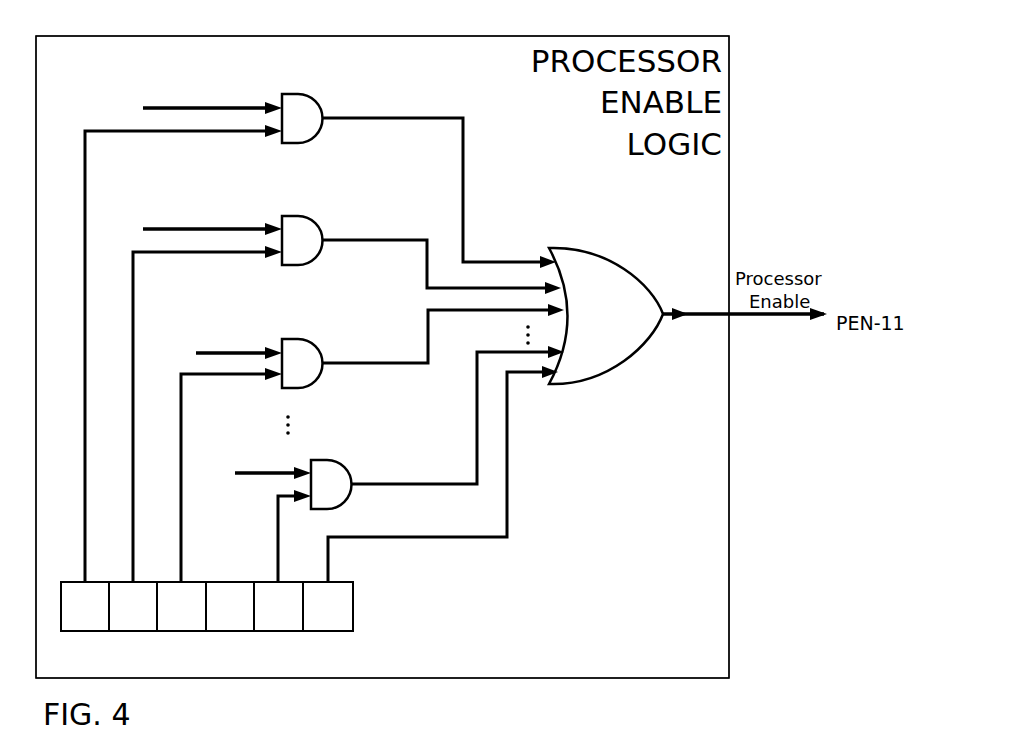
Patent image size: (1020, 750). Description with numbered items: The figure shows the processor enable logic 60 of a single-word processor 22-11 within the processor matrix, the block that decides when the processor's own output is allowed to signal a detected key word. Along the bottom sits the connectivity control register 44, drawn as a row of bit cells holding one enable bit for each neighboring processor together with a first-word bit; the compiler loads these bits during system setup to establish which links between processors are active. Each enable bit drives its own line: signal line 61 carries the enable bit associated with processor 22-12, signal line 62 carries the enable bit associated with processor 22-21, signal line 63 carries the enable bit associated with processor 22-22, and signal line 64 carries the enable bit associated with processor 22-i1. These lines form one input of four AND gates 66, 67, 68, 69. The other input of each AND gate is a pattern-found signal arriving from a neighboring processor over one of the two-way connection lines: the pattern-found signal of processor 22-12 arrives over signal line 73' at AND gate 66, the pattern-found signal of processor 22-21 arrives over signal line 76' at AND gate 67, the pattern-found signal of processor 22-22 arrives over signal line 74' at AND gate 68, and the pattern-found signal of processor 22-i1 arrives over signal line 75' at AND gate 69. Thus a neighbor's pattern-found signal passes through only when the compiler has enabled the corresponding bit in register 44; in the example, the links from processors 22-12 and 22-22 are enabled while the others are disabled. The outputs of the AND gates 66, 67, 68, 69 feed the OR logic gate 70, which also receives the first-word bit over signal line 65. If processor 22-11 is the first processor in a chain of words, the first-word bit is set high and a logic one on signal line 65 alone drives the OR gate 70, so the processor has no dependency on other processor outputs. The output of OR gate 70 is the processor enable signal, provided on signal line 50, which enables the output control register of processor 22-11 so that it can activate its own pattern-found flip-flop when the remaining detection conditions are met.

The processor enable logic 60 is at (414, 36).
The enable signal line from EP12 bit 61 is at (85, 190).
The enable signal line from EP21 bit 62 is at (133, 300).
The enable signal line from EP22 bit 63 is at (181, 435).
The enable signal line from EPi1 bit 64 is at (278, 544).
The FW bit signal line 65 is at (352, 535).
The AND gate 66 is at (375, 117).
The AND gate 67 is at (375, 238).
The AND gate 68 is at (375, 360).
The AND gate 69 is at (375, 482).
The OR logic gate 70 is at (604, 253).
The connectivity control register (CCR) 44 is at (354, 632).
The signal line 50 is at (752, 316).
The signal line 73' is at (205, 95).
The signal line 74' is at (218, 340).
The signal line 75' is at (251, 458).
The signal line 76' is at (205, 215).
The single-word processor 22-12 is at (182, 105).
The single-word processor 22-21 is at (187, 228).
The single-word processor 22-22 is at (209, 351).
The single-word processor 22-i1 is at (251, 477).
The single-word processor 22-11 is at (743, 263).